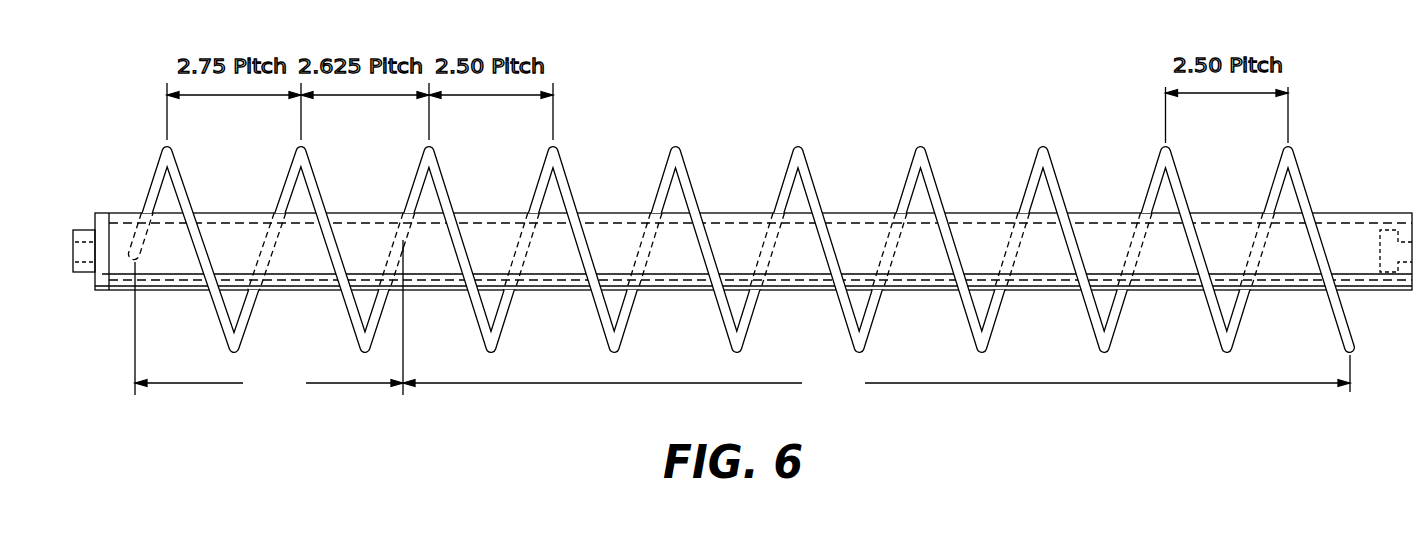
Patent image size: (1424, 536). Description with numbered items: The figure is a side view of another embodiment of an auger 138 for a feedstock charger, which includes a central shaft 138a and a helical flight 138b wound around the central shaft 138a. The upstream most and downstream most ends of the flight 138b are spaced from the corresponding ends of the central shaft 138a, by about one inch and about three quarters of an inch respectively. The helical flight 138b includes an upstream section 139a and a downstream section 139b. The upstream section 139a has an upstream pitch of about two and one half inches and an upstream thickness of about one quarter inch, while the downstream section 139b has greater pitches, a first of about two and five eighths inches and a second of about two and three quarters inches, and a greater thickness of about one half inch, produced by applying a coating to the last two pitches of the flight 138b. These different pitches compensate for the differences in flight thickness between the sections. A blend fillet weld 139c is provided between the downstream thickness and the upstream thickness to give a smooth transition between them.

The auger 138 is at (742, 184).
The central shaft 138a is at (1079, 212).
The helical flight 138b is at (1047, 145).
The upstream section 139a is at (876, 377).
The downstream section 139b is at (269, 323).
The blend fillet weld 139c is at (400, 248).